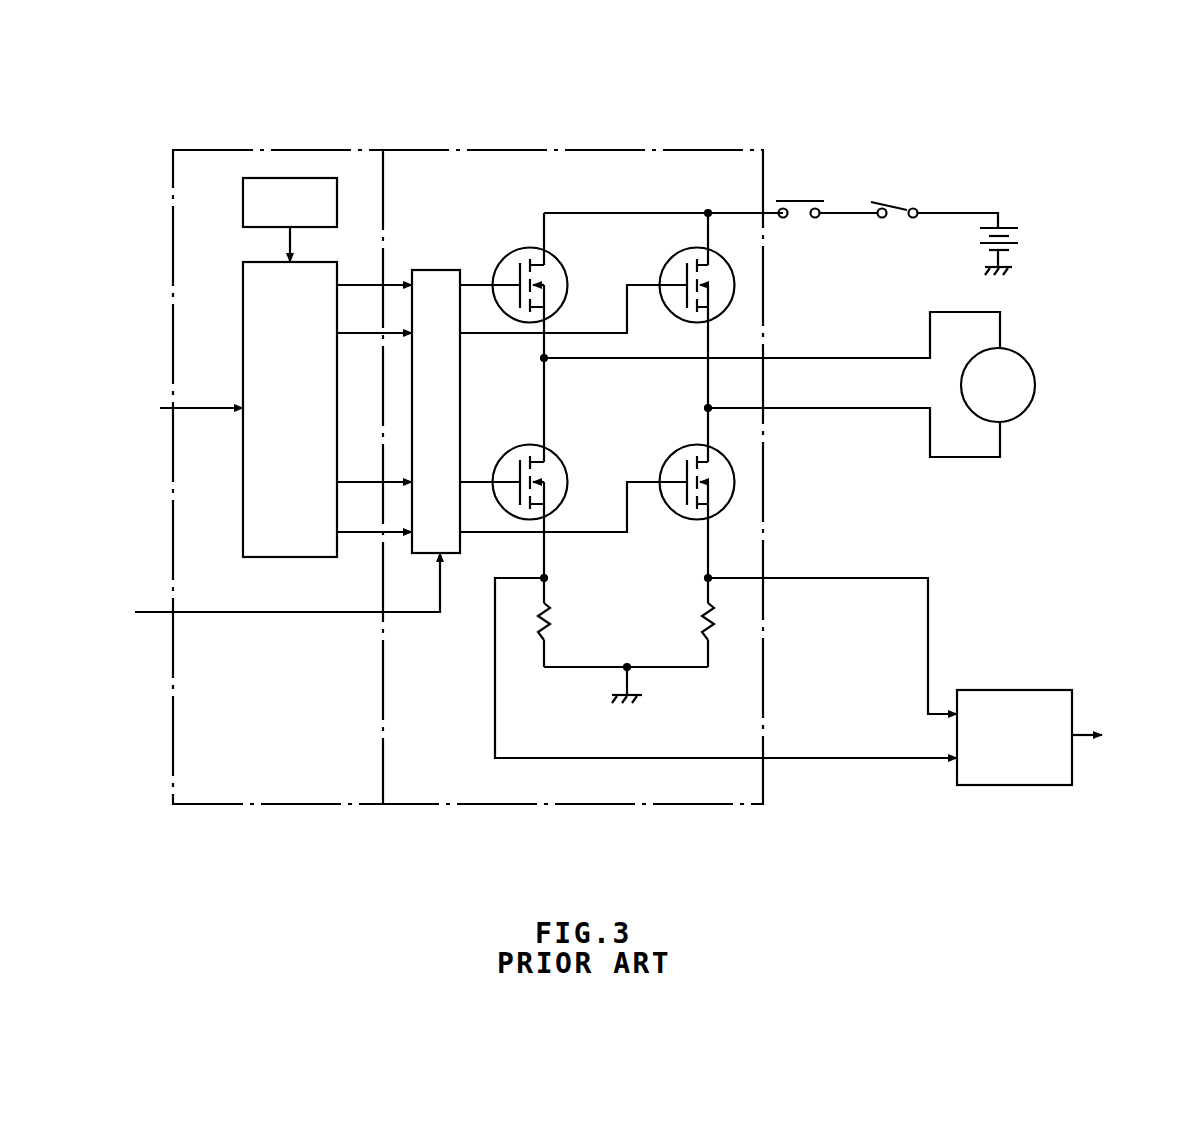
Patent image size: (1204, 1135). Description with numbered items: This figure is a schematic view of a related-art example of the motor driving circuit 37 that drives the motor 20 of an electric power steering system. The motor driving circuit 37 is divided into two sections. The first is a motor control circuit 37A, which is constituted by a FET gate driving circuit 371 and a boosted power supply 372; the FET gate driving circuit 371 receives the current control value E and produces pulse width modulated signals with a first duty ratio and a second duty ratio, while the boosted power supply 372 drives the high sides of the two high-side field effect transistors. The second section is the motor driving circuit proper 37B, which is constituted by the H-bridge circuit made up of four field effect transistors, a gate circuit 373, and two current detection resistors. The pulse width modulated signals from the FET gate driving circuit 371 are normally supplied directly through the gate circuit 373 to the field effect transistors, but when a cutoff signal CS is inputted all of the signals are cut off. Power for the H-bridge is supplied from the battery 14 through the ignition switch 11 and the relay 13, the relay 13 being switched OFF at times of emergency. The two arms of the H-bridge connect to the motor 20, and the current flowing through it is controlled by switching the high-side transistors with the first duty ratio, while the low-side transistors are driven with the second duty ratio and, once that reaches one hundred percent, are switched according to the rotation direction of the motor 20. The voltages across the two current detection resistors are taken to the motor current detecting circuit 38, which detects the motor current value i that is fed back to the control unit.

The motor driving circuit 37 is at (497, 125).
The motor control circuit 37A is at (173, 706).
The motor driving circuit proper 37B is at (627, 810).
The FET gate driving circuit 371 is at (243, 330).
The boosted power supply 372 is at (283, 178).
The gate circuit 373 is at (430, 270).
The relay 13 is at (802, 184).
The ignition switch 11 is at (903, 193).
The battery 14 is at (1020, 233).
The motor 20 is at (1025, 413).
The motor current detecting circuit 38 is at (1030, 690).